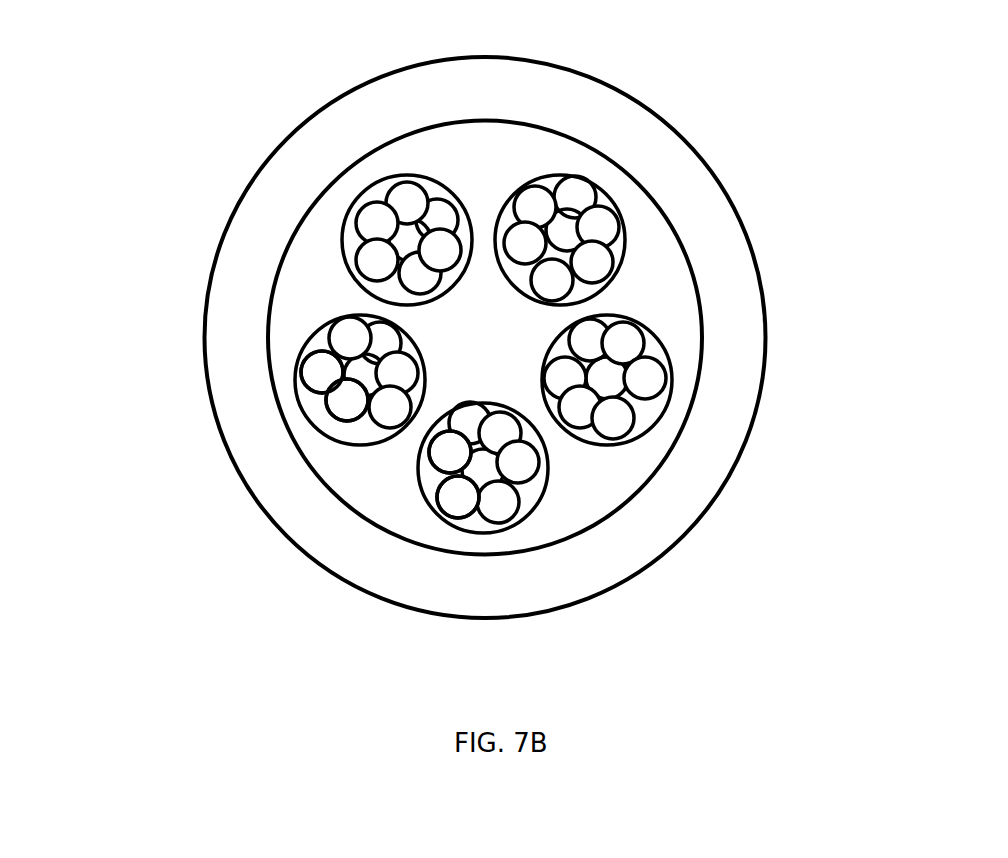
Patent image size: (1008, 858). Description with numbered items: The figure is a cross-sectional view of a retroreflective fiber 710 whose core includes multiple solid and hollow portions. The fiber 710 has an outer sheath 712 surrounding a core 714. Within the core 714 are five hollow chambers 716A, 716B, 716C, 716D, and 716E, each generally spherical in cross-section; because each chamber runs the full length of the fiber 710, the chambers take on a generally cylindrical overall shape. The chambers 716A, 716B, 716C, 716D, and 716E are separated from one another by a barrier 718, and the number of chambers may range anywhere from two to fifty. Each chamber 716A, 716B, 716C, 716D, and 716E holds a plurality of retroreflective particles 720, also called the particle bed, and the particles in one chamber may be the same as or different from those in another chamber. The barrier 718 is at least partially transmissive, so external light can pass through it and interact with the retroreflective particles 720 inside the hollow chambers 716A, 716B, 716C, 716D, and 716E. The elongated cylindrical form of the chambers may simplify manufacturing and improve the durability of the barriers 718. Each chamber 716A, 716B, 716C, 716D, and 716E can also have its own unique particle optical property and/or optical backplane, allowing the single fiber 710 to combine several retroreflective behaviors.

The retroreflective fiber 710 is at (193, 153).
The sheath 712 is at (623, 540).
The core 714 is at (680, 233).
The barrier 718 is at (662, 278).
The hollow chamber 716A is at (370, 192).
The hollow chamber 716B is at (608, 205).
The hollow chamber 716C is at (667, 400).
The hollow chamber 716D is at (462, 522).
The hollow chamber 716E is at (310, 337).
The retroreflective particles 720 is at (463, 502).